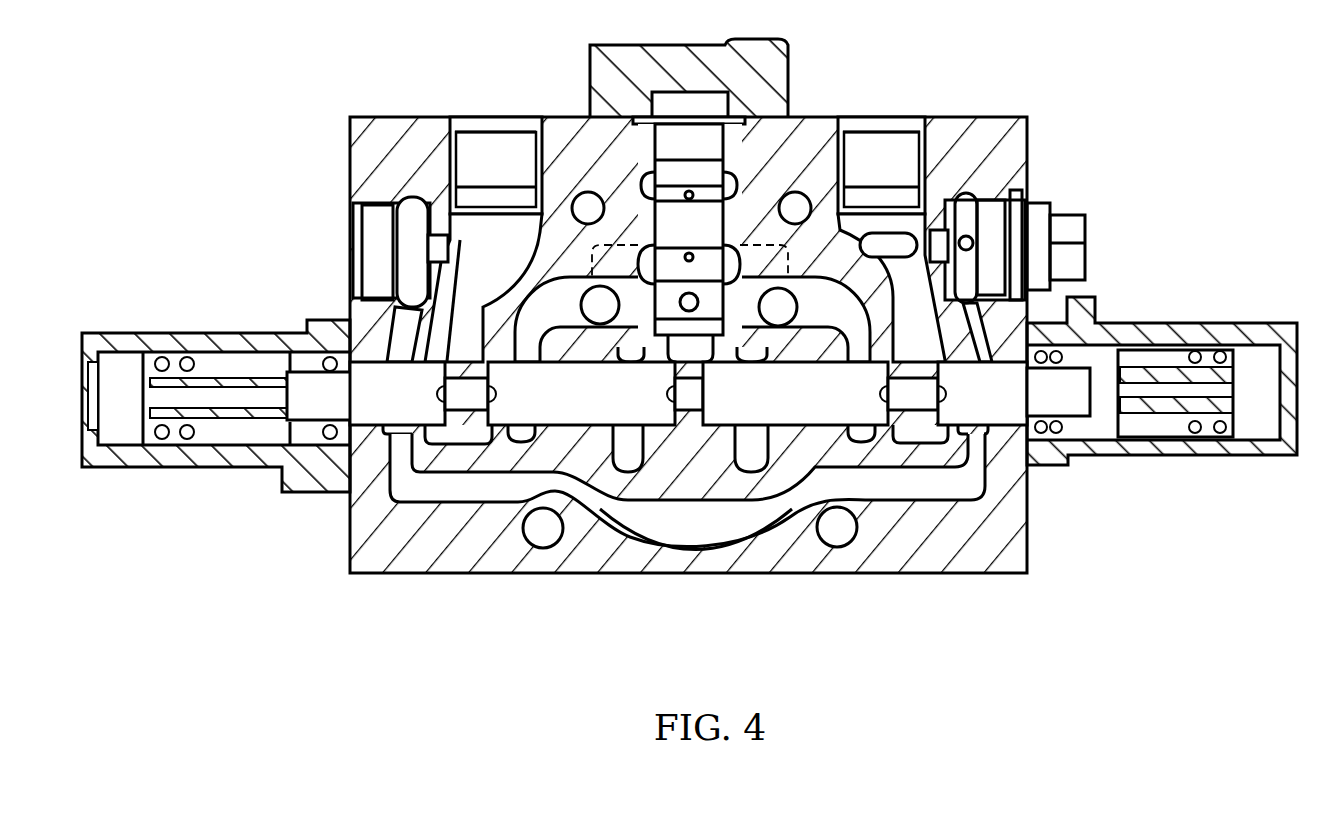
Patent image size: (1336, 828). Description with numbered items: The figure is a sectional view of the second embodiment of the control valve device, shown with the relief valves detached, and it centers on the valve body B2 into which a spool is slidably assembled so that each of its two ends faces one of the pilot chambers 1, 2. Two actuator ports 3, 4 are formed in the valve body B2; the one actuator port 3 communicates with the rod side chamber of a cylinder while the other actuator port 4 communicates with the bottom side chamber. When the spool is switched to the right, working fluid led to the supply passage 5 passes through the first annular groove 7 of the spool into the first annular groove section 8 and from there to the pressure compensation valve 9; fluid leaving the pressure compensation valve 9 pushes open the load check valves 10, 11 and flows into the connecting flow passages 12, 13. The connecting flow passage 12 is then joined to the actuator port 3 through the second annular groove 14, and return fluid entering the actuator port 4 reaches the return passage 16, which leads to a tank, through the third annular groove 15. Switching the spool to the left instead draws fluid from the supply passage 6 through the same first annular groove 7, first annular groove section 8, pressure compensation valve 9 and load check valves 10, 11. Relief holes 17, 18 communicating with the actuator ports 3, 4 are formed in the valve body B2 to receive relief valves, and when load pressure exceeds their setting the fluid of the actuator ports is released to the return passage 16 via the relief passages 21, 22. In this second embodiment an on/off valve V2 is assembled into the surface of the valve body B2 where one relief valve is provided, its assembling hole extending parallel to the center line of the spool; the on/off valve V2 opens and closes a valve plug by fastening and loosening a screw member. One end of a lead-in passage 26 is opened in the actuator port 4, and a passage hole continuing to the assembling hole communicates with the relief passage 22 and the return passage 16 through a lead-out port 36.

The valve body B2 is at (365, 116).
The on/off valve V2 is at (1087, 233).
The pilot chamber 1 is at (272, 383).
The pilot chamber 2 is at (1102, 410).
The actuator port 3 is at (476, 150).
The actuator port 4 is at (847, 122).
The supply passage 5 is at (753, 470).
The supply passage 6 is at (623, 470).
The first annular groove 7 is at (688, 487).
The first annular groove section 8 is at (673, 432).
The pressure compensation valve 9 is at (676, 217).
The load check valve 10 is at (582, 193).
The load check valve 11 is at (778, 326).
The connecting flow passage 12 is at (520, 440).
The connecting flow passage 13 is at (862, 440).
The second annular groove 14 is at (460, 430).
The third annular groove 15 is at (907, 440).
The return passage 16 is at (947, 490).
The relief hole 17 is at (358, 243).
The relief hole 18 is at (1015, 257).
The relief passage 21 is at (412, 245).
The relief passage 22 is at (986, 440).
The lead-in passage 26 is at (870, 247).
The lead-out port 36 is at (968, 237).